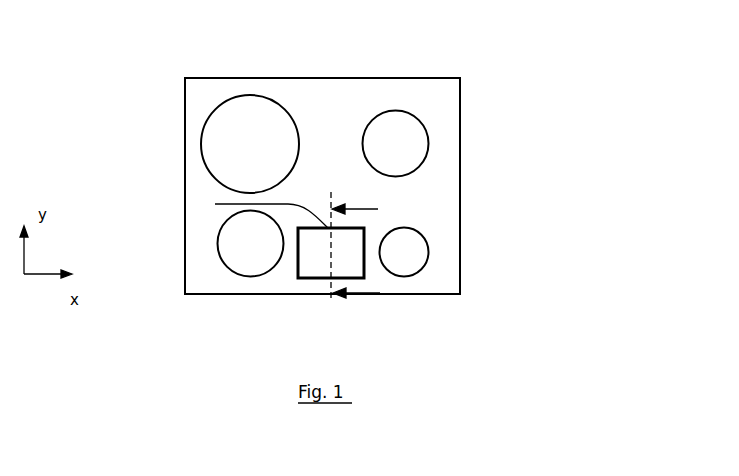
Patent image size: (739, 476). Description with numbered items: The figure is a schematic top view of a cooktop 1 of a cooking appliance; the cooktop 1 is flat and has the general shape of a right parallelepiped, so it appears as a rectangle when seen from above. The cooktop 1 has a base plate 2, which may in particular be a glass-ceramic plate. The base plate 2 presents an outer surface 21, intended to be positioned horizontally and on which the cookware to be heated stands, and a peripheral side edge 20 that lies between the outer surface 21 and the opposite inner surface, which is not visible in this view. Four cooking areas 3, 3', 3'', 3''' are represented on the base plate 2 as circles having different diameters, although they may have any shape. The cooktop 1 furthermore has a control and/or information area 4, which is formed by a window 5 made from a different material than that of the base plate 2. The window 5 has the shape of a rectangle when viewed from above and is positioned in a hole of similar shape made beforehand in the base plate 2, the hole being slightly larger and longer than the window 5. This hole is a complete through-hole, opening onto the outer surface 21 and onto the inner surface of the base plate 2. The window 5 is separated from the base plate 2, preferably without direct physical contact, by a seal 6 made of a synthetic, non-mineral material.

The cooktop 1 is at (131, 86).
The base plate 2 is at (435, 84).
The cooking area 3 is at (200, 144).
The cooking area 3' is at (442, 138).
The cooking area 3'' is at (453, 241).
The cooking area 3''' is at (201, 241).
The control and/or information area 4 is at (316, 291).
The window 5 is at (352, 238).
The seal 6 is at (215, 204).
The peripheral side edge 20 is at (460, 274).
The outer surface 21 is at (365, 108).